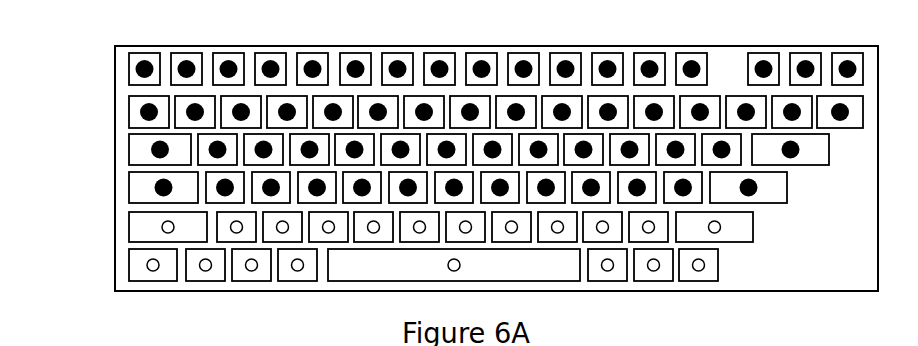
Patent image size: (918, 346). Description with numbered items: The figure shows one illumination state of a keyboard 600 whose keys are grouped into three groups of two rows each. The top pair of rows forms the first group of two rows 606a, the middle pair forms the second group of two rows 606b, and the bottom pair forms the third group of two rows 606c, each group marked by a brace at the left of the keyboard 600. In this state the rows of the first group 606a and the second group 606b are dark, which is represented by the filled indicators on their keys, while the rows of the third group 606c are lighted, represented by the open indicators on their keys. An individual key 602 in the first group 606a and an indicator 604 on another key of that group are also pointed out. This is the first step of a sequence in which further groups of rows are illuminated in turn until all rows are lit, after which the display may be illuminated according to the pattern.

The keyboard 600 is at (727, 47).
The key 602 is at (143, 53).
The key indicator 604 is at (357, 66).
The first group of two rows 606a is at (97, 54).
The second group of two rows 606b is at (97, 130).
The third group of two rows 606c is at (97, 212).